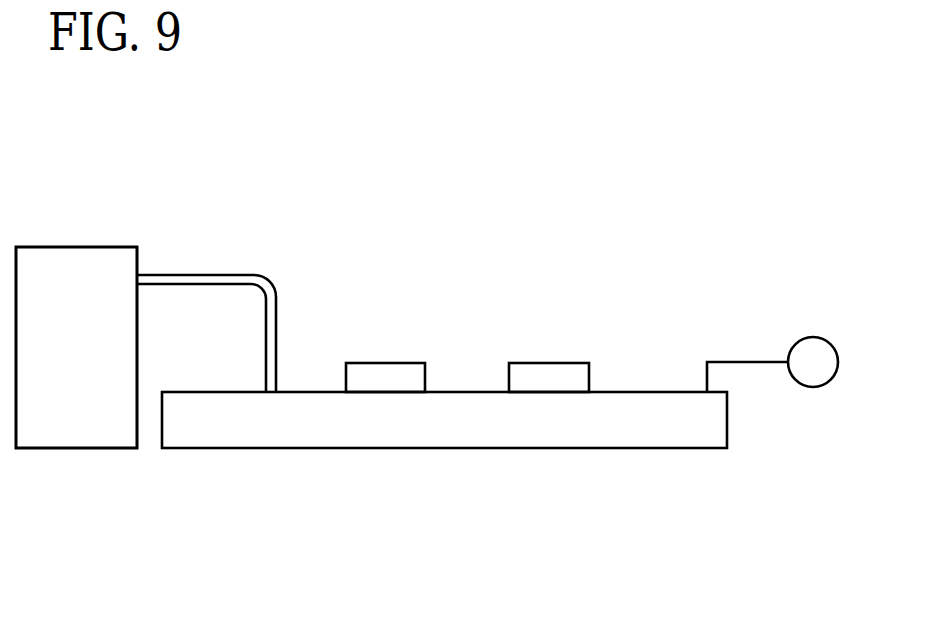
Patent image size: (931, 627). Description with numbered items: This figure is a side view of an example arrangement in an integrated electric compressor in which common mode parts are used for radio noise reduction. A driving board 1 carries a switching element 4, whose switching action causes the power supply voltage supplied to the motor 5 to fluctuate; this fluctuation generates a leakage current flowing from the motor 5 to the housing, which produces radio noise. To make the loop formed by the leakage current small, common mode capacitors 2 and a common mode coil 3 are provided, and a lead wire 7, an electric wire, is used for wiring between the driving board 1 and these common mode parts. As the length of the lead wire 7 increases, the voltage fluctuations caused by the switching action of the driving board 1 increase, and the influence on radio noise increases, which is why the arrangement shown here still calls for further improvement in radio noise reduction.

The driving board 1 is at (635, 392).
The common mode capacitors 2 is at (107, 247).
The common mode coil 3 is at (76, 347).
The switching element 4 is at (408, 361).
The motor 5 is at (818, 337).
The lead wire 7 is at (244, 275).